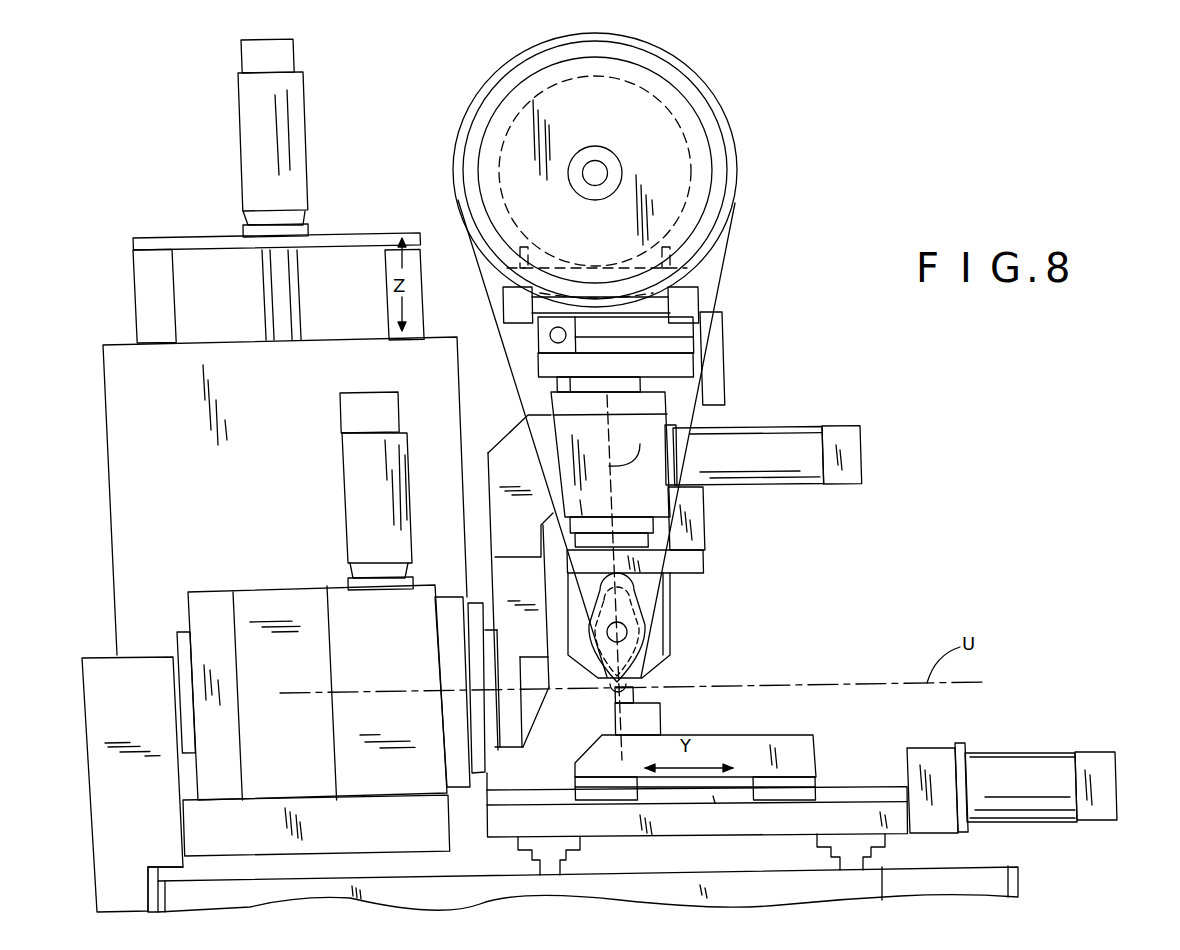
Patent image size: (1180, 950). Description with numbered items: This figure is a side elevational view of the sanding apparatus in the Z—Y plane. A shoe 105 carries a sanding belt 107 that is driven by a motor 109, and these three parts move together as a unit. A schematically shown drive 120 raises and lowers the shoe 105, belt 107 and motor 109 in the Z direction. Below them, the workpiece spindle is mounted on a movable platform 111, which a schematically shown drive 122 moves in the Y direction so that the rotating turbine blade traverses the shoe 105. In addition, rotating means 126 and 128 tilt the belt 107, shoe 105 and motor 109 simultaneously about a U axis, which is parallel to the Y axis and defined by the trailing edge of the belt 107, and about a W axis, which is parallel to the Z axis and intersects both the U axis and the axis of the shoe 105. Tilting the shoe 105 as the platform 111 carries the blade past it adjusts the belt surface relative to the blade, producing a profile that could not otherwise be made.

The shoe 105 is at (628, 682).
The sanding belt 107 is at (660, 557).
The motor 109 is at (663, 157).
The movable platform 111 is at (935, 753).
The means for Z direction movement 120 is at (250, 163).
The means for moving the platform in the Y direction 122 is at (1053, 763).
The means for rotating about the U axis 126 is at (274, 607).
The means for rotating about the W axis 128 is at (647, 488).